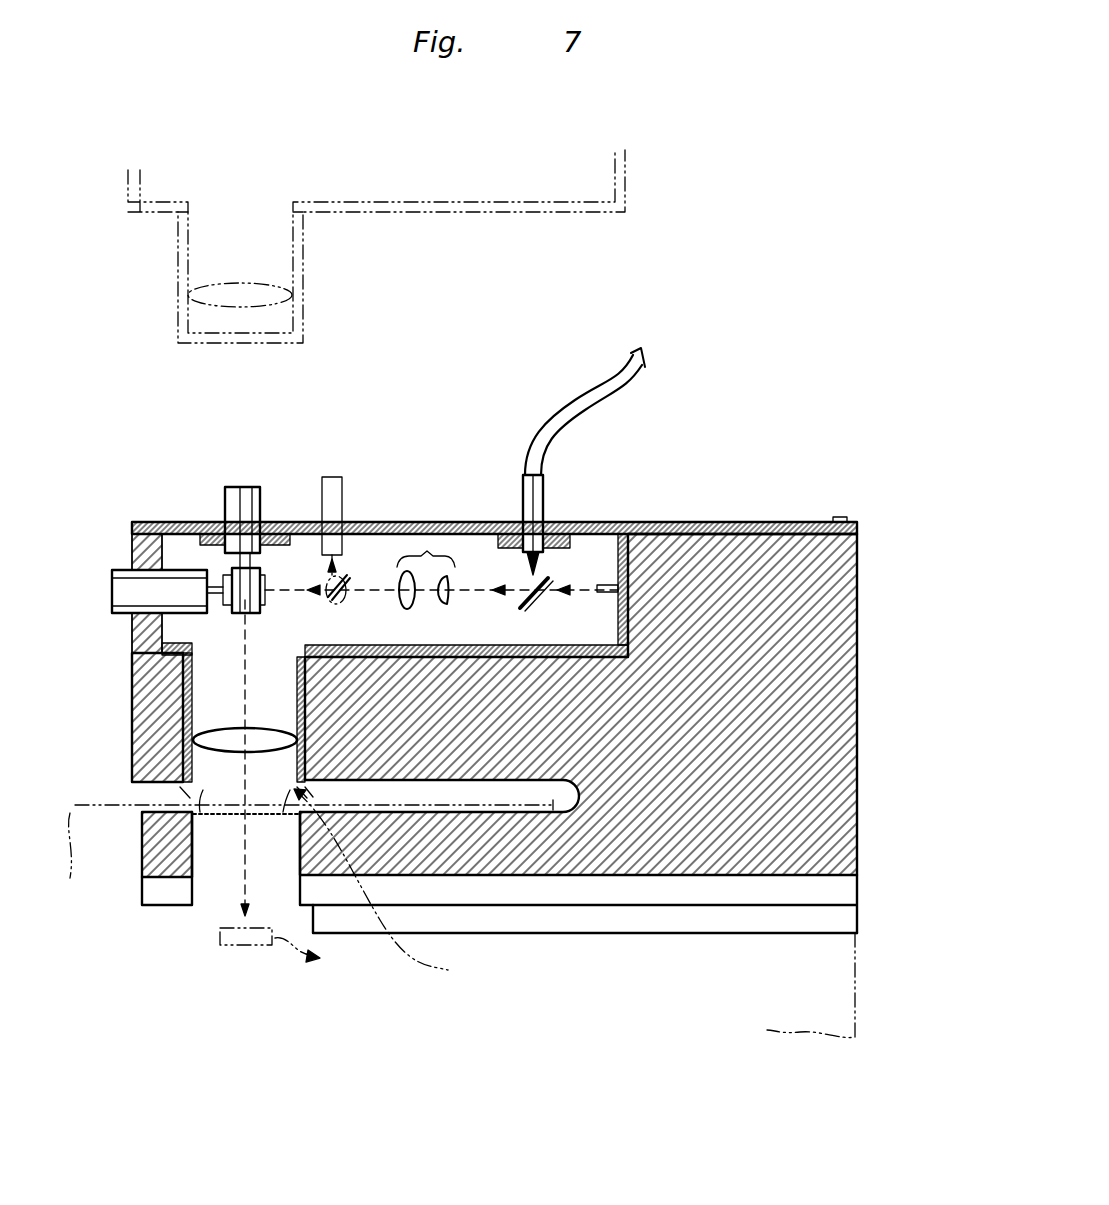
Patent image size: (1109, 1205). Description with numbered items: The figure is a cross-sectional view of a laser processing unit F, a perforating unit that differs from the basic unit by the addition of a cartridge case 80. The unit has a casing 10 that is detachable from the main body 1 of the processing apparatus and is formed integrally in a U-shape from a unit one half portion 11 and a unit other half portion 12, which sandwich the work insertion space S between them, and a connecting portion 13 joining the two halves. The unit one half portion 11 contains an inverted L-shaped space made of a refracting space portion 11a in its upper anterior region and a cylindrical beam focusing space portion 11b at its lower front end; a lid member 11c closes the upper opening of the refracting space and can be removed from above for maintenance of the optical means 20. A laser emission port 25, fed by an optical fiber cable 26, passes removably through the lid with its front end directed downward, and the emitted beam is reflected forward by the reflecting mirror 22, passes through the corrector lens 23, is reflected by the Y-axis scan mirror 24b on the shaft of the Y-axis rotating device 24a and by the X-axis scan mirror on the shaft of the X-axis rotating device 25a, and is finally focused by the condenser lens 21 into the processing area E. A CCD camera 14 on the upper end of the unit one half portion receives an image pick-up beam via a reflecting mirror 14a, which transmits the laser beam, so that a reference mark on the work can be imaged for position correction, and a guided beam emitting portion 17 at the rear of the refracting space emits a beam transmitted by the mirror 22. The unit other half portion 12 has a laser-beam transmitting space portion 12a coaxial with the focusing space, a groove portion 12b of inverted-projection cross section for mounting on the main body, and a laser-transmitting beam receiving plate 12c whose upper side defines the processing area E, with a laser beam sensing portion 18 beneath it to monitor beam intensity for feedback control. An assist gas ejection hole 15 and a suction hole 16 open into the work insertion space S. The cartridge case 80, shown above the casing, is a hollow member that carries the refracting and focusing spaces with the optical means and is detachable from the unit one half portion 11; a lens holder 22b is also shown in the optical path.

The main body of processing apparatus 1 is at (75, 806).
The casing 10 is at (502, 749).
The unit one half portion 11 is at (132, 688).
The refracting space portion 11a is at (592, 540).
The beam focusing space portion 11b is at (187, 672).
The lid member 11c is at (695, 522).
The unit other half portion 12 is at (142, 860).
The laser-beam transmitting space portion 12a is at (215, 888).
The groove portion 12b is at (625, 888).
The beam receiving plate 12c is at (263, 816).
The connecting portion 13 is at (832, 688).
The CCD camera 14 is at (332, 474).
The reflecting mirror 14a is at (340, 594).
The assist gas ejection hole 15 is at (200, 830).
The suction hole 16 is at (392, 889).
The guided beam emitting portion 17 is at (607, 594).
The laser beam sensing portion 18 is at (245, 945).
The optical means 20 is at (455, 565).
The condenser lens 21 is at (274, 266).
The reflecting mirror 22 is at (541, 612).
The lens holder 22b is at (268, 603).
The corrector lens 23 is at (425, 553).
The Y-axis rotating device 24a is at (238, 487).
The Y-axis scan mirror 24b is at (257, 569).
The laser emission port 25 is at (528, 493).
The X-axis rotating device 25a is at (122, 569).
The optical fiber cable 26 is at (573, 405).
The cartridge case 80 is at (632, 200).
The work insertion space S is at (142, 792).
The processing area E is at (282, 767).
The laser processing unit F is at (700, 432).